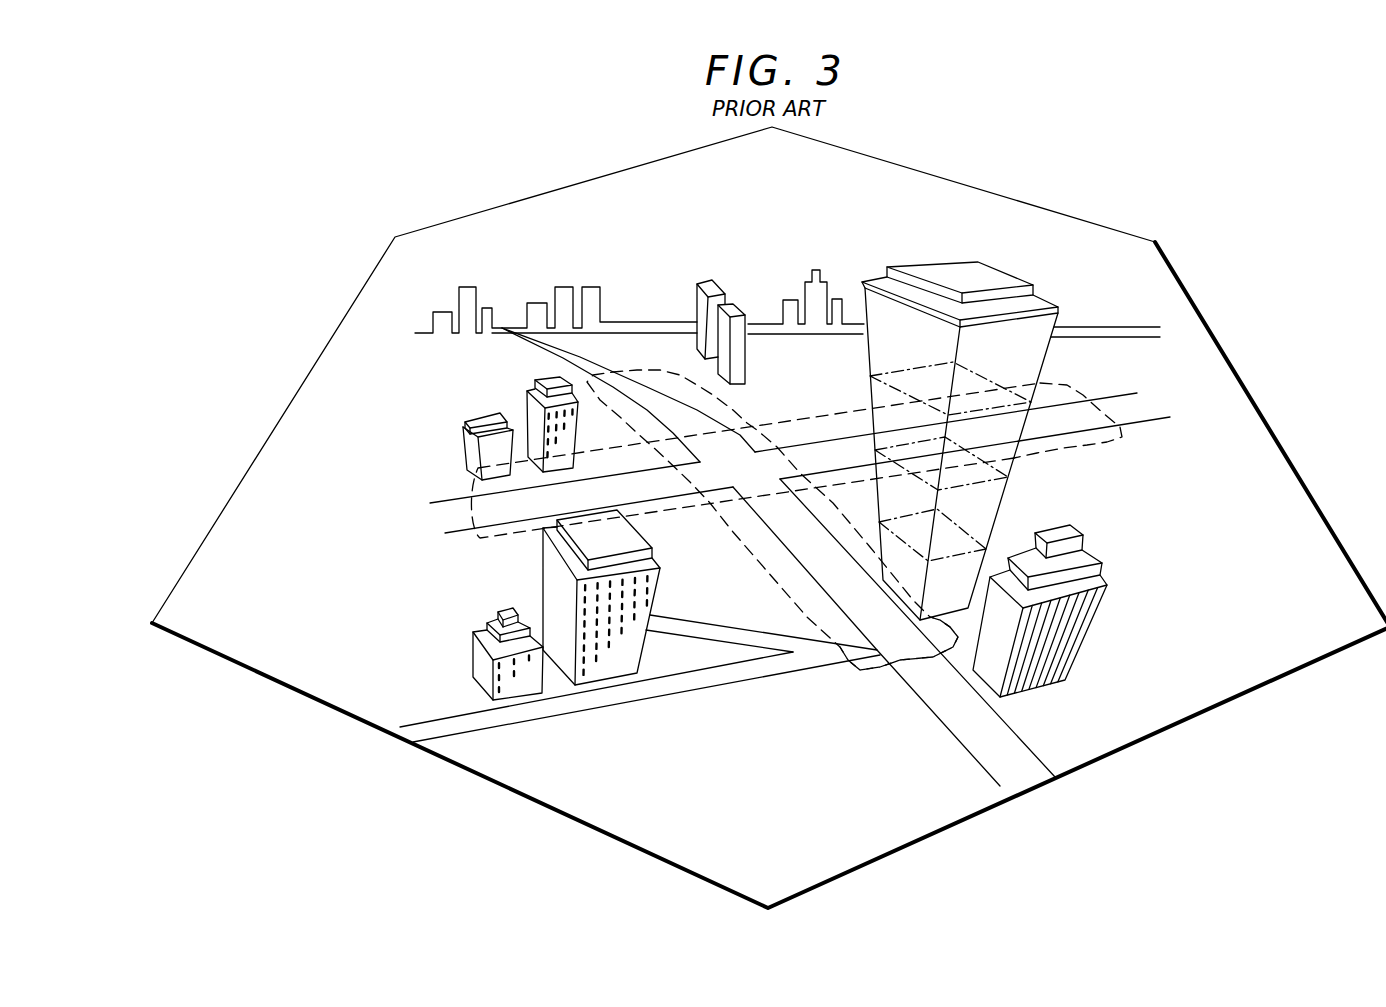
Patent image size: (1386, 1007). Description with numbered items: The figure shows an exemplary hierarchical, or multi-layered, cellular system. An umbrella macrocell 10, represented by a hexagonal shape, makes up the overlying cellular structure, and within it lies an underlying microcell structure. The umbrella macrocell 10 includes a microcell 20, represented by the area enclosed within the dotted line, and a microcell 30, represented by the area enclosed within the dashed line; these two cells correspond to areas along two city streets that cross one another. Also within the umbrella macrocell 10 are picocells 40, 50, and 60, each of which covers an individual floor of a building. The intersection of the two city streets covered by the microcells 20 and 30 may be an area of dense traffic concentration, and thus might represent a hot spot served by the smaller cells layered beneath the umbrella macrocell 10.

The umbrella macrocell 10 is at (474, 782).
The microcell 20 is at (655, 370).
The microcell 30 is at (523, 533).
The picocell 40 is at (1013, 392).
The picocell 50 is at (1000, 475).
The picocell 60 is at (933, 570).